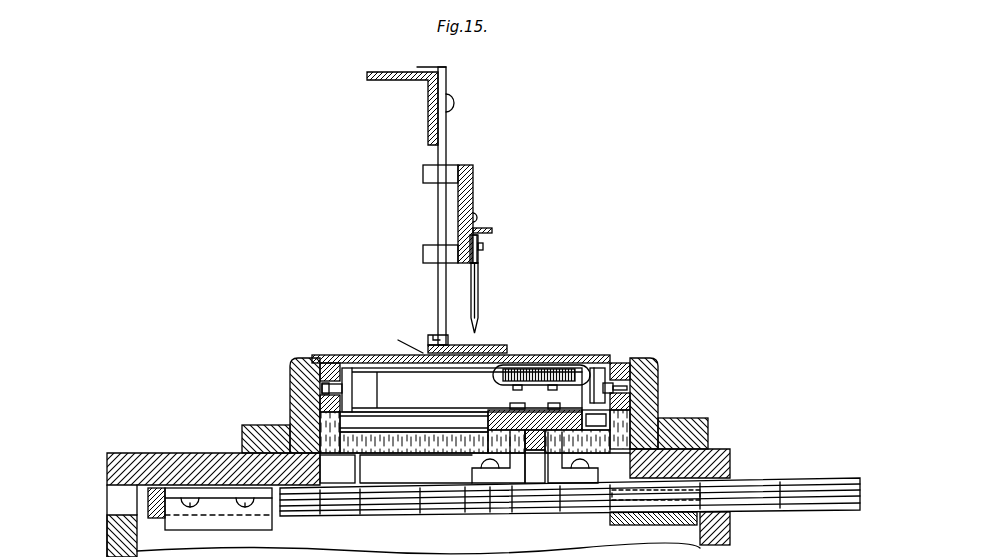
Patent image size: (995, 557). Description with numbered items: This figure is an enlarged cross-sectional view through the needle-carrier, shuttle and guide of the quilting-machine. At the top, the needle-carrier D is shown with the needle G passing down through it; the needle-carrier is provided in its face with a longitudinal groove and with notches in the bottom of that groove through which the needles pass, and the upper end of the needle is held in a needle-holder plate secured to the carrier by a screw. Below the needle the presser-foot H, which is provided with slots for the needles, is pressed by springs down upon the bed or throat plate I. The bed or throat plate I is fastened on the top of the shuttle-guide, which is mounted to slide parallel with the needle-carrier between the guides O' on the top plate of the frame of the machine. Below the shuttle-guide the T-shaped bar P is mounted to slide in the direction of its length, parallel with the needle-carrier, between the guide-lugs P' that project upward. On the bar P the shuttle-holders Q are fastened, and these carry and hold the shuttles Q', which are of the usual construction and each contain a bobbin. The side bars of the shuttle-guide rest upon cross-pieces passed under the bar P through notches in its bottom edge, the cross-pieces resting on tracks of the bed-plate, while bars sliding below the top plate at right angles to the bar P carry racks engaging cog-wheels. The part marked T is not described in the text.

The needle-carrier D is at (457, 214).
The needle G is at (479, 290).
The presser-foot H is at (467, 339).
The bed or throat plate I is at (512, 354).
The guides O' is at (486, 405).
The shuttle Q' is at (529, 384).
The shuttle-holder Q is at (528, 397).
The T-shaped bar P is at (475, 430).
The guide-lugs P' is at (535, 457).
The support T is at (715, 534).